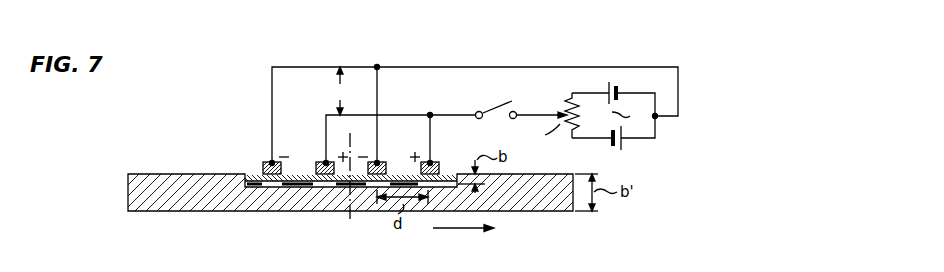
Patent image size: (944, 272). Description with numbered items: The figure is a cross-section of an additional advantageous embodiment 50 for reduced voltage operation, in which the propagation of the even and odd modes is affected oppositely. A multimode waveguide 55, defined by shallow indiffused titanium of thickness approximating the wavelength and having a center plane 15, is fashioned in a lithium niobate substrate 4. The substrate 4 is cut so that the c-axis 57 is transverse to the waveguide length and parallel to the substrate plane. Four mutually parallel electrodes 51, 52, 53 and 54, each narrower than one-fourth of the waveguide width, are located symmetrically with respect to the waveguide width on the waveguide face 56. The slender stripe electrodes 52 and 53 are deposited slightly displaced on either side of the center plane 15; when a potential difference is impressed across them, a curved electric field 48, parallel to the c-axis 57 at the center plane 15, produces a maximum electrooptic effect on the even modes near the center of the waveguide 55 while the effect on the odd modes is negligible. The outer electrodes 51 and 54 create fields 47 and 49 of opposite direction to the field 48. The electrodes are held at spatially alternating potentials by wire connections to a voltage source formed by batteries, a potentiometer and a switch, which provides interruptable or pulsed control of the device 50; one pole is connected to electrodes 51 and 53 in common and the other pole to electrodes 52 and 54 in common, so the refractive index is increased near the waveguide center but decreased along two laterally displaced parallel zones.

The substrate 4 is at (160, 176).
The center plane 15 is at (350, 220).
The electric field 47 is at (287, 188).
The curved electric field 48 is at (337, 188).
The electric field 49 is at (415, 188).
The embodiment 50 is at (230, 100).
The electrode 51 is at (265, 165).
The electrode 52 is at (318, 165).
The electrode 53 is at (385, 165).
The electrode 54 is at (437, 165).
The multimode waveguide 55 is at (252, 188).
The waveguide face 56 is at (252, 170).
The c-axis 57 is at (468, 230).